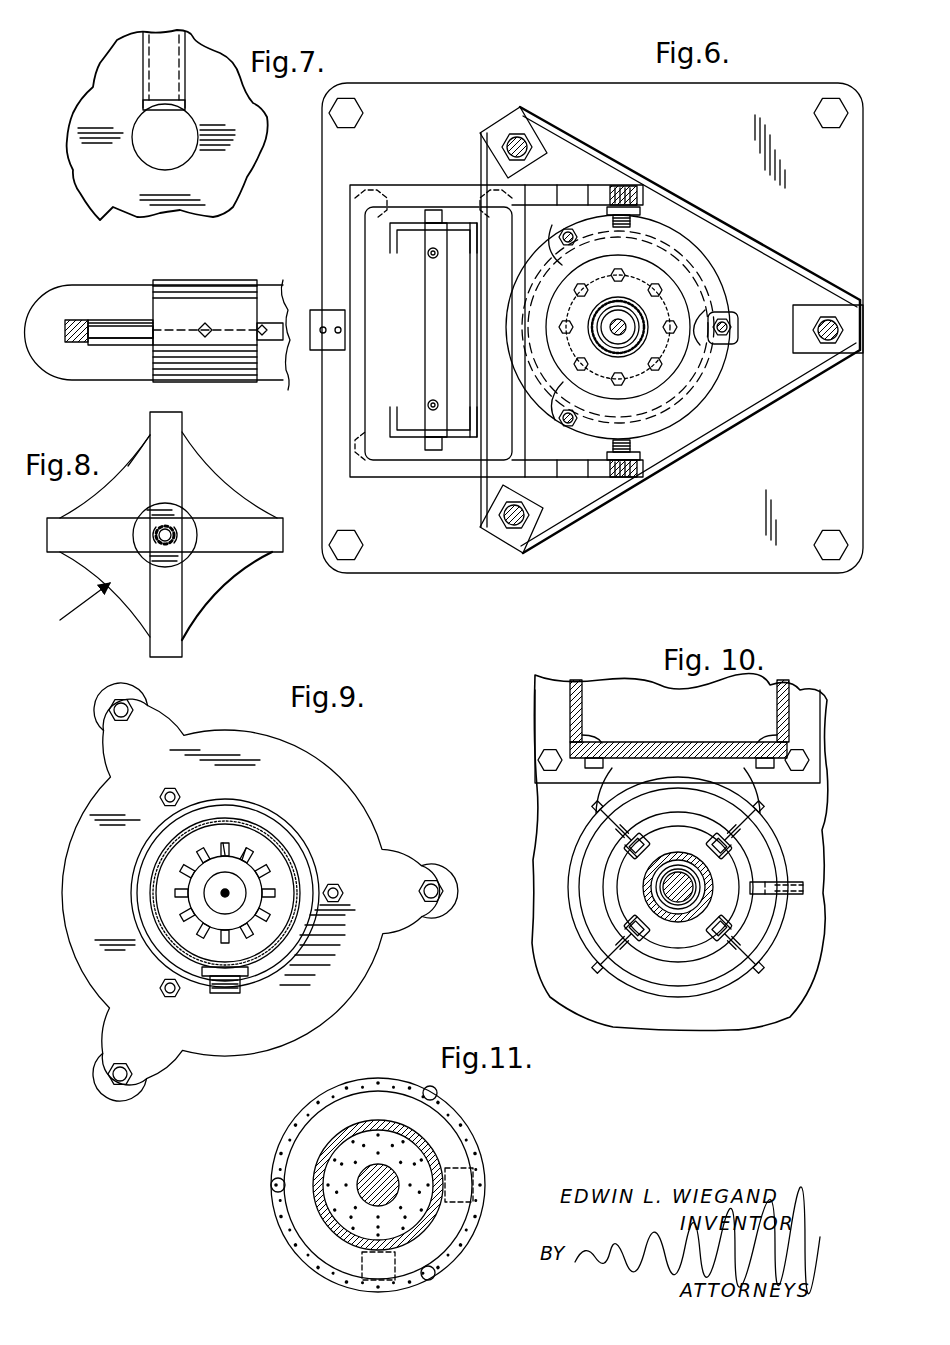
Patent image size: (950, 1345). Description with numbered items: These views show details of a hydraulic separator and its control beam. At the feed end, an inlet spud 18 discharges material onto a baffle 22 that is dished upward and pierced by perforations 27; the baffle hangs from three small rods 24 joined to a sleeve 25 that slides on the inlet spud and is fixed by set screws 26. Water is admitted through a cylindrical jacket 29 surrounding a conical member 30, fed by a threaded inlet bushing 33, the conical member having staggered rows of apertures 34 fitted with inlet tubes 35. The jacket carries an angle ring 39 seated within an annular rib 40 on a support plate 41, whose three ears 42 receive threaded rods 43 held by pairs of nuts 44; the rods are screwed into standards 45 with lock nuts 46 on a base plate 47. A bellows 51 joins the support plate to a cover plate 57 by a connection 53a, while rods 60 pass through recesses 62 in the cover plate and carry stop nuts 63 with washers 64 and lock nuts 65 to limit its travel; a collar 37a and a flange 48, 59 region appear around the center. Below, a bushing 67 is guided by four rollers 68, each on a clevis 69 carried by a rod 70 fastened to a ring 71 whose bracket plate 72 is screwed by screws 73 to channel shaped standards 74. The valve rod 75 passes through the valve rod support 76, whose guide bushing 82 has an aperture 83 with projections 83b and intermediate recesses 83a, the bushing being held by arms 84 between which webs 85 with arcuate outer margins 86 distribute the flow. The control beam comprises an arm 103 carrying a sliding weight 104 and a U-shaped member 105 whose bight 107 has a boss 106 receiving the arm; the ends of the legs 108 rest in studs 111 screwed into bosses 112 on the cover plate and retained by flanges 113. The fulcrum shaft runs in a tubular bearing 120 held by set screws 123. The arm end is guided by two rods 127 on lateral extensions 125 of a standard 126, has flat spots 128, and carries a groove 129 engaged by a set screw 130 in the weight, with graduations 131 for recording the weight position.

In FIG. 11, the inlet spud 18 is at (320, 1160).
In FIG. 11, the baffle 22 is at (490, 1158).
In FIG. 11, the small rods 24 is at (440, 1095).
In FIG. 11, the sleeve 25 is at (313, 1128).
In FIG. 11, the set screws 26 is at (480, 1174).
In FIG. 11, the perforations 27 is at (382, 1077).
In FIG. 9, the cylindrical jacket 29 is at (294, 867).
In FIG. 9, the conical member 30 is at (263, 856).
In FIG. 9, the threaded inlet bushing 33 is at (210, 993).
In FIG. 9, the apertures 34 is at (205, 890).
In FIG. 9, the inlet tubes 35 is at (245, 848).
In FIG. 6, the collar 37a is at (598, 327).
In FIG. 9, the angle ring 39 is at (280, 950).
In FIG. 9, the annular rib 40 is at (318, 922).
In FIG. 9, the support plate 41 is at (232, 725).
In FIG. 9, the ears 42 is at (140, 732).
In FIG. 6, the threaded rods 43 is at (533, 128).
In FIG. 9, the threaded rods 43 is at (118, 710).
In FIG. 9, the nuts 44 is at (119, 712).
In FIG. 6, the standards 45 is at (500, 123).
In FIG. 6, the lock nuts 46 is at (834, 355).
In FIG. 6, the base plate 47 is at (725, 573).
In FIG. 7, the base plate 47 is at (53, 297).
In FIG. 10, the shaft 48 is at (700, 877).
In FIG. 6, the bellows 51 is at (663, 313).
In FIG. 6, the connection 53a is at (655, 285).
In FIG. 6, the cover plate 57 is at (725, 240).
In FIG. 6, the bolt circle 59 is at (686, 372).
In FIG. 6, the rods 60 is at (570, 227).
In FIG. 6, the recesses 62 is at (732, 323).
In FIG. 6, the stop nuts 63 is at (548, 256).
In FIG. 6, the washer 64 is at (560, 235).
In FIG. 6, the lock nuts 65 is at (618, 185).
In FIG. 10, the bushing 67 is at (640, 894).
In FIG. 10, the rollers 68 is at (715, 833).
In FIG. 10, the clevis 69 is at (655, 927).
In FIG. 10, the rod 70 is at (640, 930).
In FIG. 10, the ring 71 is at (577, 871).
In FIG. 10, the bracket plate 72 is at (658, 750).
In FIG. 10, the screws 73 is at (600, 740).
In FIG. 6, the channel shaped standards 74 is at (470, 251).
In FIG. 6, the valve rod 75 is at (618, 327).
In FIG. 9, the valve rod 75 is at (222, 894).
In FIG. 11, the valve rod 75 is at (384, 1178).
In FIG. 8, the valve rod support 76 is at (71, 611).
In FIG. 8, the guide bushing 82 is at (192, 520).
In FIG. 8, the aperture 83 is at (173, 540).
In FIG. 8, the recesses 83a is at (178, 532).
In FIG. 8, the projections 83b is at (153, 532).
In FIG. 8, the arms 84 is at (168, 433).
In FIG. 8, the webs 85 is at (208, 493).
In FIG. 8, the outer margin 86 is at (140, 452).
In FIG. 7, the arm 103 is at (270, 342).
In FIG. 7, the weight 104 is at (245, 132).
In FIG. 6, the U-shaped member 105 is at (357, 193).
In FIG. 7, the boss 106 is at (320, 353).
In FIG. 6, the bight 107 is at (368, 300).
In FIG. 6, the legs 108 is at (400, 190).
In FIG. 6, the studs 111 is at (622, 187).
In FIG. 6, the bosses 112 is at (704, 193).
In FIG. 6, the washers or flanges 113 is at (640, 215).
In FIG. 6, the tubular bearing 120 is at (432, 315).
In FIG. 6, the set screws 123 is at (427, 255).
In FIG. 7, the lateral extensions 125 is at (102, 320).
In FIG. 7, the standard 126 is at (68, 330).
In FIG. 7, the rods 127 is at (120, 320).
In FIG. 7, the flat spots 128 is at (175, 118).
In FIG. 7, the groove 129 is at (140, 103).
In FIG. 7, the set screw 130 is at (160, 78).
In FIG. 10, the set screw 130 is at (798, 887).
In FIG. 7, the graduations 131 is at (145, 335).